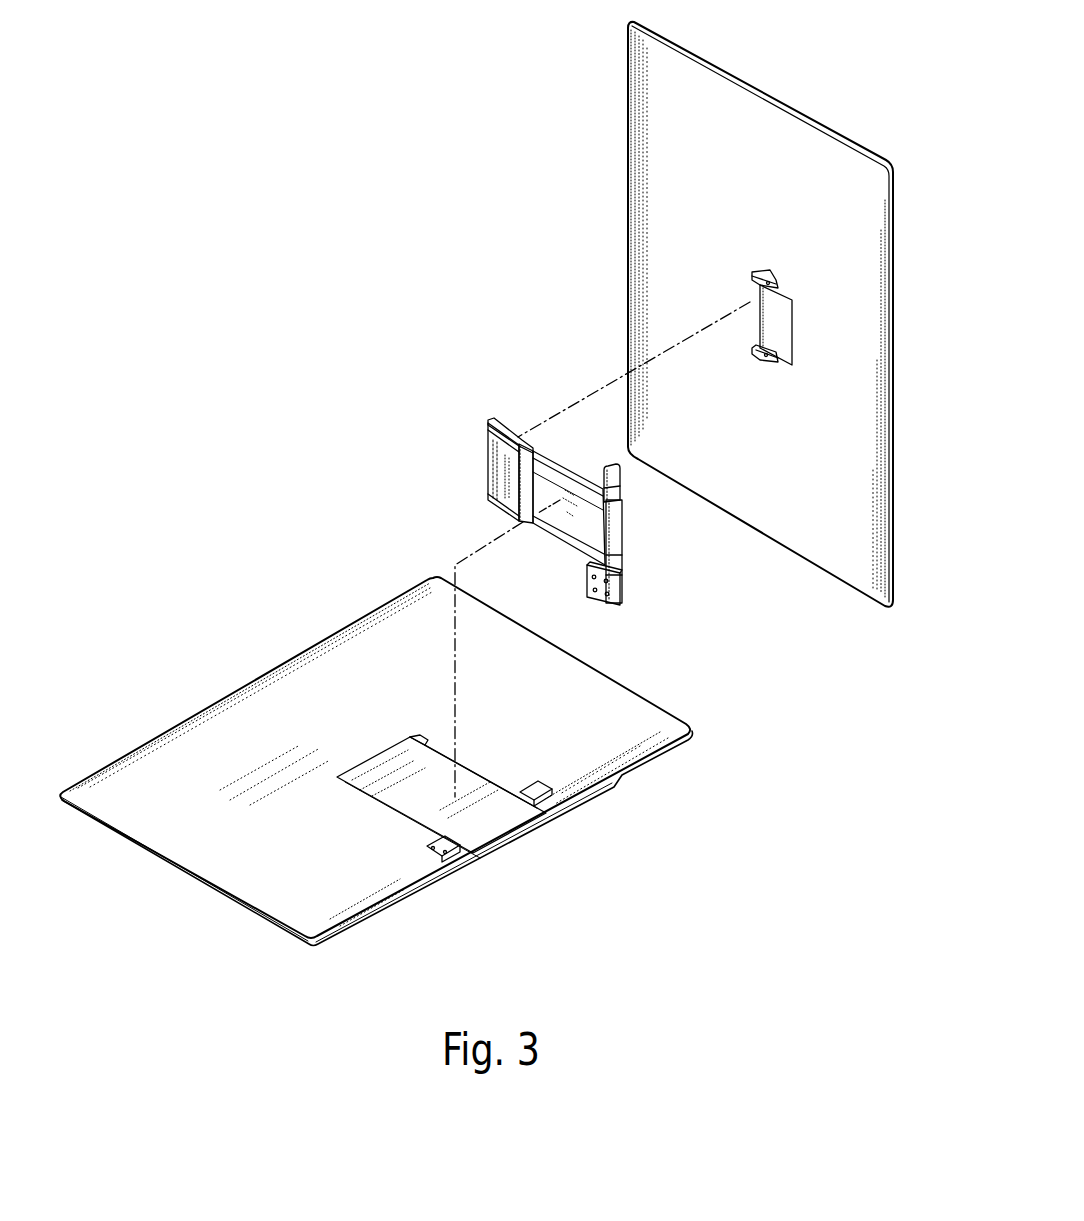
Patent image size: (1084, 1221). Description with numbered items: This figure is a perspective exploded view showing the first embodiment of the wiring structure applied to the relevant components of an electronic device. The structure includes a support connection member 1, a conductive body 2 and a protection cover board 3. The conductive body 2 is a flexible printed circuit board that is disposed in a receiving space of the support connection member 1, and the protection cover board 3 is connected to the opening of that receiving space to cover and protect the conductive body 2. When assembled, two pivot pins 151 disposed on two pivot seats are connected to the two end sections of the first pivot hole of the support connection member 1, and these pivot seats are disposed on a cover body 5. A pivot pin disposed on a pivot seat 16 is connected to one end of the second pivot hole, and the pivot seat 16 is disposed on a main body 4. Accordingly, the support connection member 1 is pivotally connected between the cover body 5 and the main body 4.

The support connection member 1 is at (556, 462).
The conductive body 2 is at (622, 480).
The protection cover board 3 is at (488, 492).
The main body 4 is at (678, 755).
The cover body 5 is at (660, 120).
The pivot seat 16 is at (598, 600).
The pivot pins 151 is at (490, 425).